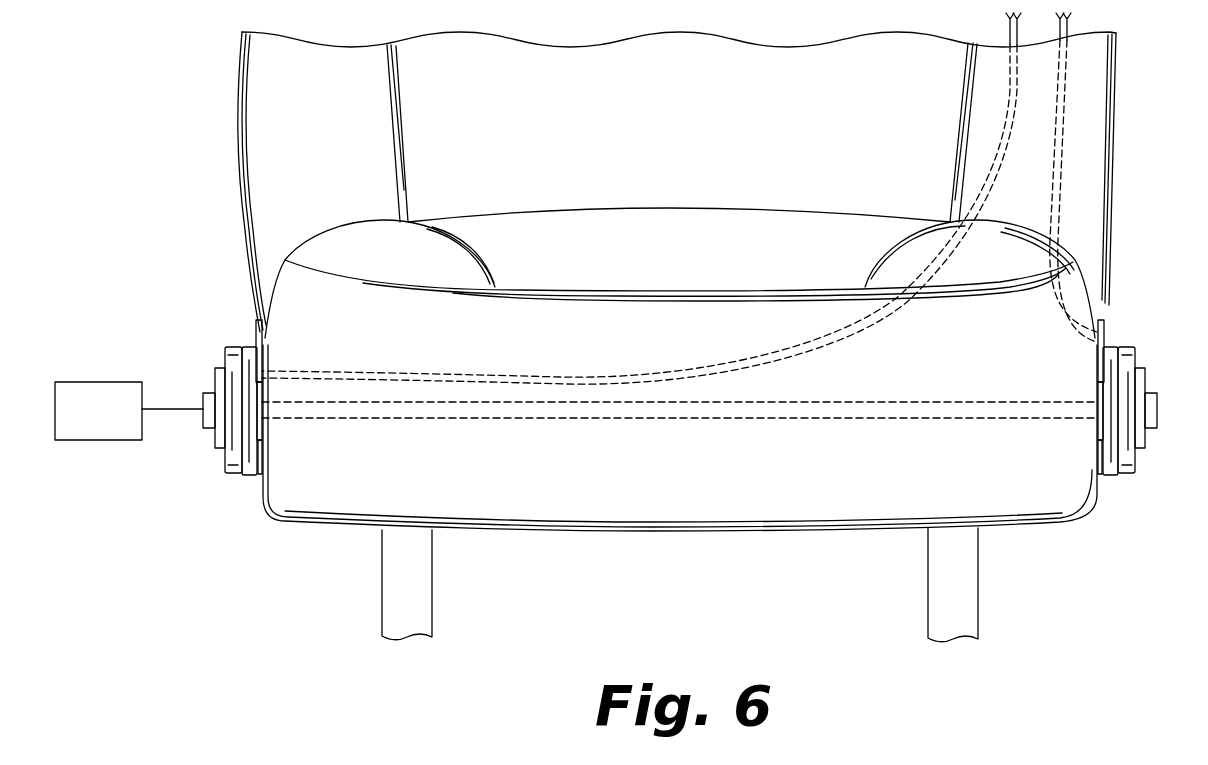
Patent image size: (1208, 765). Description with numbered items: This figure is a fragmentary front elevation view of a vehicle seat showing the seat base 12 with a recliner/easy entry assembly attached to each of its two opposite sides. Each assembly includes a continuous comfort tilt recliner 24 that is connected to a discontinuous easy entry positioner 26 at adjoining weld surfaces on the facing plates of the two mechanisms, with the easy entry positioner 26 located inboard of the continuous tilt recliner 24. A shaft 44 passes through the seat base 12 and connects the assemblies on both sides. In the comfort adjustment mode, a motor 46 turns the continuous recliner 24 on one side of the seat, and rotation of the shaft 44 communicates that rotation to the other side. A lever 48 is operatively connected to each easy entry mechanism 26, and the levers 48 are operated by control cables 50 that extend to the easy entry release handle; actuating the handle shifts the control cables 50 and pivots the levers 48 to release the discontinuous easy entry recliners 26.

The seat base 12 is at (1015, 527).
The continuous comfort tilt recliner 24 is at (236, 448).
The discontinuous easy entry positioner 26 is at (252, 476).
The shaft 44 is at (675, 419).
The motor 46 is at (98, 382).
The lever 48 is at (255, 332).
The control cables 50 is at (1005, 118).